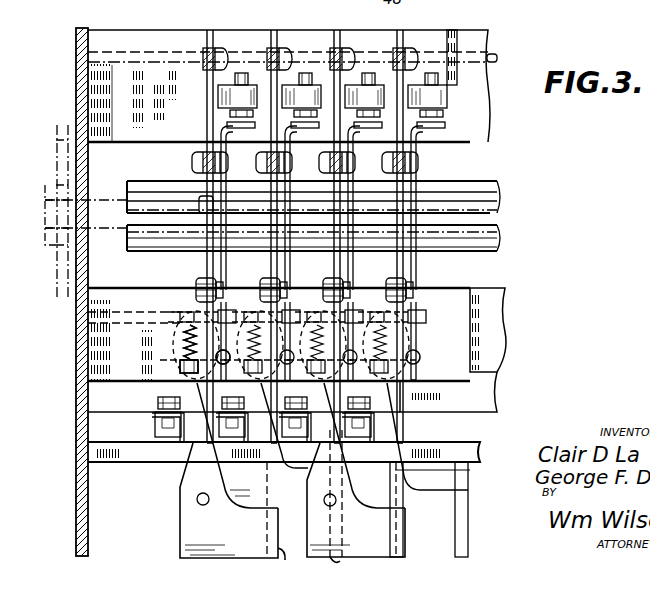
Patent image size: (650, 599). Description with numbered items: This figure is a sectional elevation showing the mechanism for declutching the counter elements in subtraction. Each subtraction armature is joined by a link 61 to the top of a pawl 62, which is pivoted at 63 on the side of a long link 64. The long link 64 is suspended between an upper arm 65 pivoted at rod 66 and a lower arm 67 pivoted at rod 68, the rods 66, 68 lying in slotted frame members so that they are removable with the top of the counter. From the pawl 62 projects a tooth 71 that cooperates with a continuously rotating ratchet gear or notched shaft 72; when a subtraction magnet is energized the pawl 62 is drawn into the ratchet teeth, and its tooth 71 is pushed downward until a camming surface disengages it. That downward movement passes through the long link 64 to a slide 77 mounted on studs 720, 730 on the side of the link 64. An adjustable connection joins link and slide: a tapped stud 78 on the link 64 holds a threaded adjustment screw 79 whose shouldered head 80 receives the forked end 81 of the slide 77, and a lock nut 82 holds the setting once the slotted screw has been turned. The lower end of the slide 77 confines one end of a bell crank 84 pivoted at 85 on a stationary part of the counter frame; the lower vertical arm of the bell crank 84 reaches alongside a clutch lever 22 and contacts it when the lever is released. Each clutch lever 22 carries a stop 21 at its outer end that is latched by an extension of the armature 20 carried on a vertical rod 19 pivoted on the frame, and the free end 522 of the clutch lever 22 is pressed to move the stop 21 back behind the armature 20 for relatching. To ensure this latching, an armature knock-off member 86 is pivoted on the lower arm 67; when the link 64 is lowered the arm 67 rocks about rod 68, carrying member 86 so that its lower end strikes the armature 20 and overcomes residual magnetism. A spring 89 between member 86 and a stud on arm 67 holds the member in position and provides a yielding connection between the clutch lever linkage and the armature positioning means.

The vertical rod 19 is at (292, 559).
The armature 20 is at (182, 541).
The stop 21 is at (158, 422).
The clutch lever 22 is at (160, 404).
The link 61 is at (194, 157).
The pawl 62 is at (205, 262).
The pawl pivot 63 is at (268, 288).
The long link 64 is at (338, 270).
The upper arm 65 is at (268, 46).
The pivot rod 66 is at (496, 54).
The lower arm 67 is at (430, 341).
The pivot rod 68 is at (494, 306).
The tooth 71 is at (206, 206).
The ratchet gear or notched shaft 72 is at (484, 189).
The slide 77 is at (408, 270).
The tapped stud 78 is at (463, 96).
The adjustment screw 79 is at (469, 115).
The shouldered head 80 is at (469, 208).
The forked end 81 is at (471, 131).
The lock nut 82 is at (471, 77).
The bell crank 84 is at (420, 362).
The bell crank pivot 85 is at (190, 375).
The armature knock-off member 86 is at (392, 405).
The spring 89 is at (186, 353).
The free end of clutch lever 522 is at (182, 420).
The stud 720 is at (420, 164).
The stud 730 is at (410, 307).